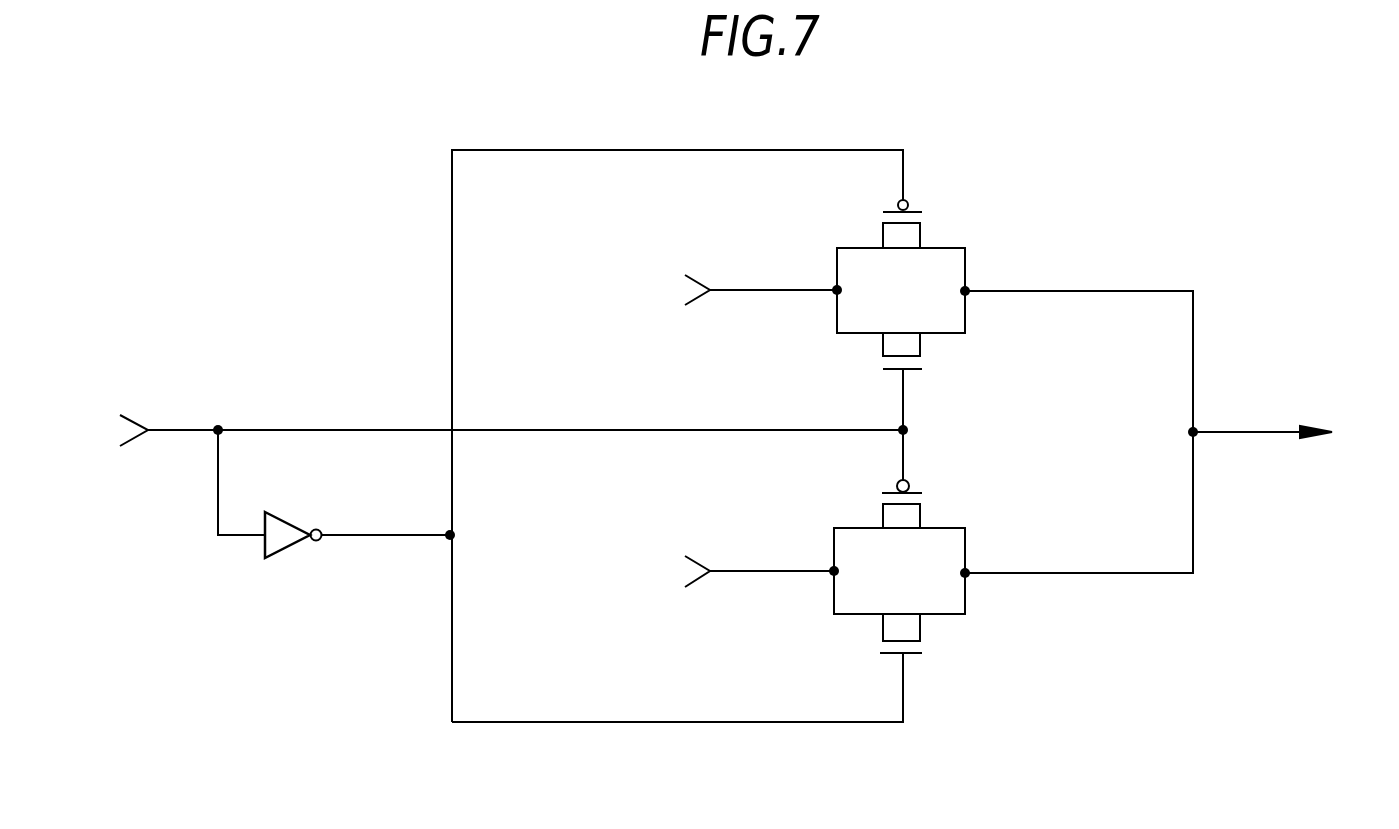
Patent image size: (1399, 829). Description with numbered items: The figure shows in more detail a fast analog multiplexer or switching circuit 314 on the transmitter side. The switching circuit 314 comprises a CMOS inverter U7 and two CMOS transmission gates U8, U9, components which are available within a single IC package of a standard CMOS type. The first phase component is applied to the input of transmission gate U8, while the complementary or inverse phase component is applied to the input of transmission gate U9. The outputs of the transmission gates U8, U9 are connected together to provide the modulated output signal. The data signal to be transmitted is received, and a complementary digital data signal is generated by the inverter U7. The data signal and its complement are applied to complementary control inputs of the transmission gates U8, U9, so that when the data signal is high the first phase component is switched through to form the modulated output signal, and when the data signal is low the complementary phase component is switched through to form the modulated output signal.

The switching circuit 314 is at (1150, 135).
The CMOS inverter U7 is at (293, 522).
The CMOS transmission gate U8 is at (901, 284).
The CMOS transmission gate U9 is at (899, 566).